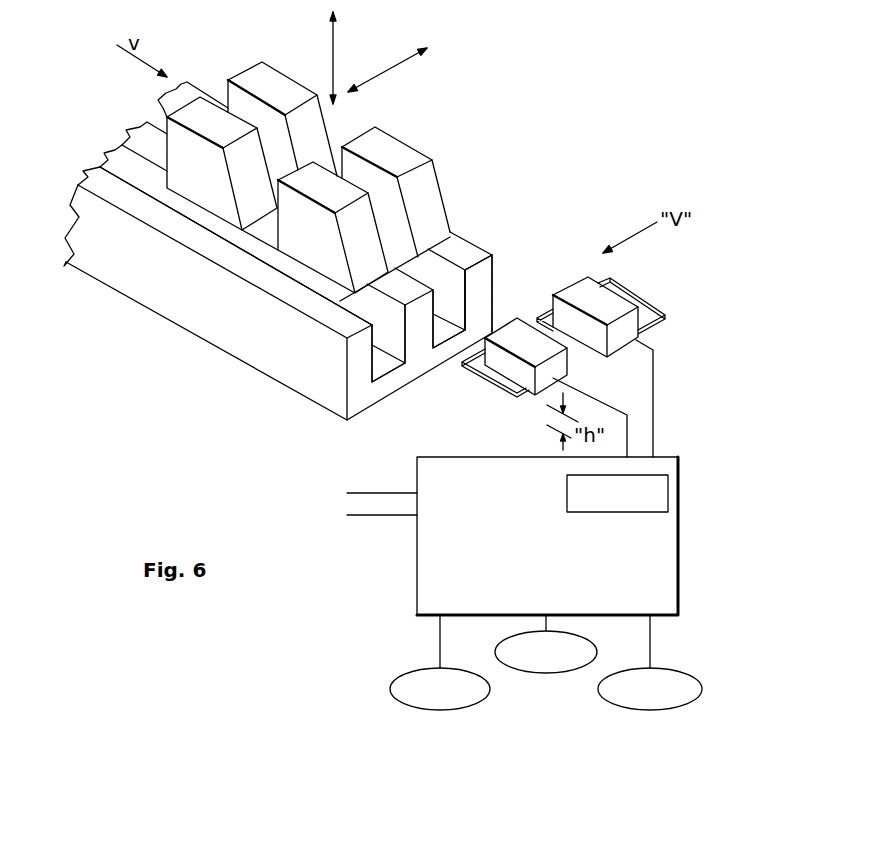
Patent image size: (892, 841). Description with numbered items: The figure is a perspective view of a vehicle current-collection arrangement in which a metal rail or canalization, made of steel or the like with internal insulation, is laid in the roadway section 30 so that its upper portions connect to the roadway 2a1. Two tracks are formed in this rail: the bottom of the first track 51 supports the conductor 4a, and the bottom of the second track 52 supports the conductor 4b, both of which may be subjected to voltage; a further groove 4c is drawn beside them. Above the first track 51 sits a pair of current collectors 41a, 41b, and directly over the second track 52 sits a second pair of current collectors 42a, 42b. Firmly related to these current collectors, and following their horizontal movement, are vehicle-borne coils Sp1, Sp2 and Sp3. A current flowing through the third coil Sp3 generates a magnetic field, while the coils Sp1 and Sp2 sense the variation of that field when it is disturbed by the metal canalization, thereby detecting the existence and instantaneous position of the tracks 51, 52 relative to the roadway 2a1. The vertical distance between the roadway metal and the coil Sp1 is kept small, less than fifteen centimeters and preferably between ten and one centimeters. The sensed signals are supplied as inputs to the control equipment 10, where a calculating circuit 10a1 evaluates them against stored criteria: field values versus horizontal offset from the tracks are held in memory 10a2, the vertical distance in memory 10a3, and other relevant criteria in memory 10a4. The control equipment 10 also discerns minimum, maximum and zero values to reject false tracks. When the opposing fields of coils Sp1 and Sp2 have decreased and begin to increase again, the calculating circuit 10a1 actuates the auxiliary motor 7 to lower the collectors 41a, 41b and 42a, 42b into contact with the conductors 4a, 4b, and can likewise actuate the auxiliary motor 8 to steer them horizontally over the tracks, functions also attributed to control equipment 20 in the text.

The roadway 2a1 is at (178, 286).
The conductor 4a is at (397, 366).
The conductor 4b is at (460, 333).
The groove 4c is at (468, 252).
The auxiliary motor 7 is at (373, 252).
The auxiliary motor 8 is at (391, 298).
The control equipment 10 is at (680, 537).
The calculating circuit 10a1 is at (594, 508).
The memory 10a2 is at (417, 701).
The memory 10a3 is at (523, 664).
The memory 10a4 is at (627, 701).
The control equipment 20 is at (366, 60).
The roadway section 30 is at (288, 362).
The current collector 41a is at (216, 176).
The current collector 41b is at (334, 248).
The current collector 42a is at (268, 72).
The current collector 42b is at (385, 145).
The first track 51 is at (310, 277).
The second track 52 is at (457, 280).
The coil Sp1 is at (503, 371).
The coil Sp2 is at (605, 303).
The coil Sp3 is at (650, 322).